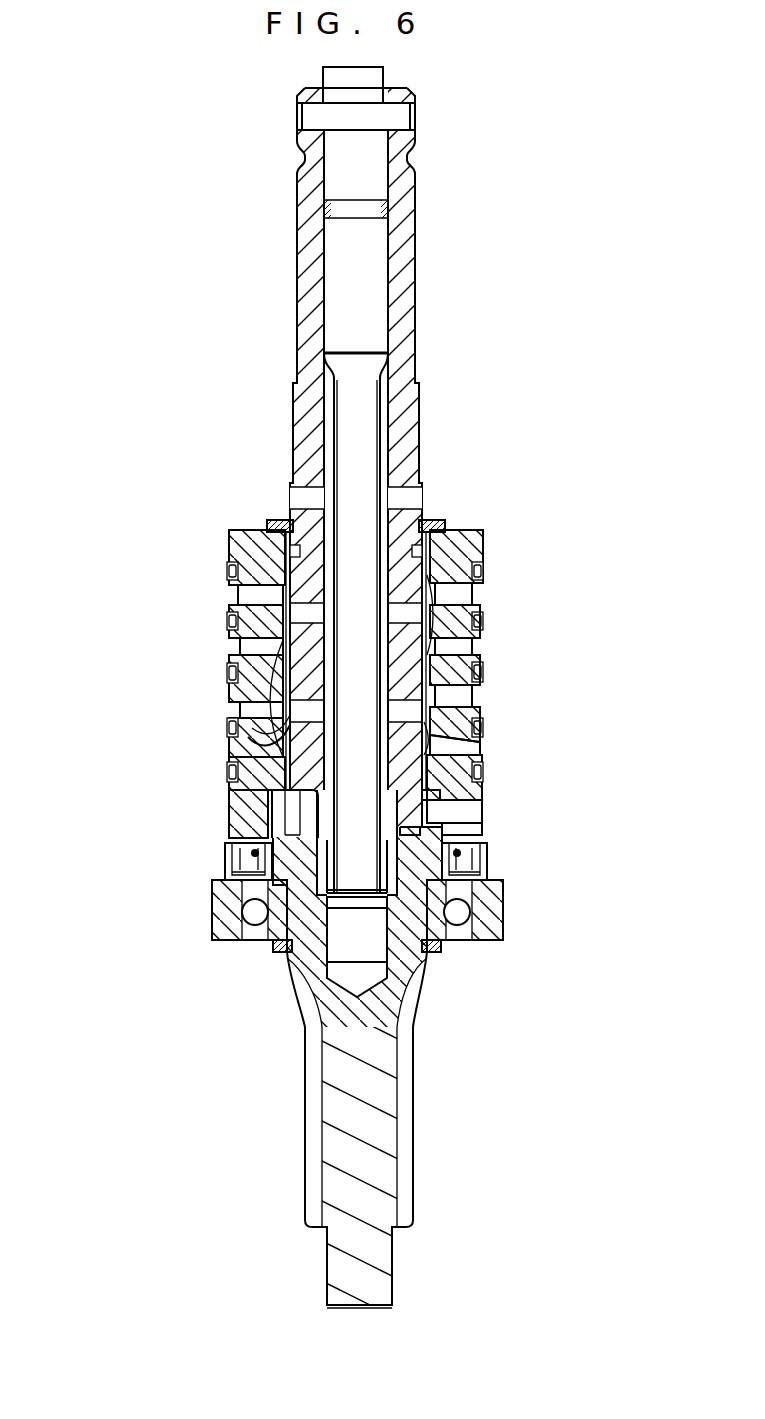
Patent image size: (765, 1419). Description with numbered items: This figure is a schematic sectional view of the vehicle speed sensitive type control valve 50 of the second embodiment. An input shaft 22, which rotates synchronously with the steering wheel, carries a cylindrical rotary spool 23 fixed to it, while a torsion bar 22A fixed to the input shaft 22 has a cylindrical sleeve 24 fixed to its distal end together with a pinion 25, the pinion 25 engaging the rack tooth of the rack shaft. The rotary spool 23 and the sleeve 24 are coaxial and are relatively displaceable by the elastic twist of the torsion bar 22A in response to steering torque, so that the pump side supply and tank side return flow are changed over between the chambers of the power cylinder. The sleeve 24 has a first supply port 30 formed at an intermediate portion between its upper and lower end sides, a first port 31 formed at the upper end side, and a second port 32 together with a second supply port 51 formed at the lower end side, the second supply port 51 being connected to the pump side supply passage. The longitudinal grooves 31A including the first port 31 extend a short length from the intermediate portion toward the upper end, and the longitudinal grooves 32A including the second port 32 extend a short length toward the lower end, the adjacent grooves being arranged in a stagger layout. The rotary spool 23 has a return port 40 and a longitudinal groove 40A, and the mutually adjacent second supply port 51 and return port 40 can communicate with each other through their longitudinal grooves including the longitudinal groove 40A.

The input shaft 22 is at (307, 197).
The torsion bar 22A is at (363, 383).
The rotary spool 23 is at (300, 518).
The sleeve 24 is at (238, 822).
The pinion 25 is at (305, 1160).
The first supply port 30 is at (463, 645).
The first port 31 is at (465, 595).
The longitudinal grooves 31A is at (470, 618).
The second port 32 is at (465, 697).
The longitudinal grooves 32A is at (276, 737).
The return port 40 is at (245, 586).
The longitudinal groove 40A is at (278, 673).
The vehicle speed sensitive type control valve 50 is at (148, 445).
The second supply port 51 is at (465, 747).